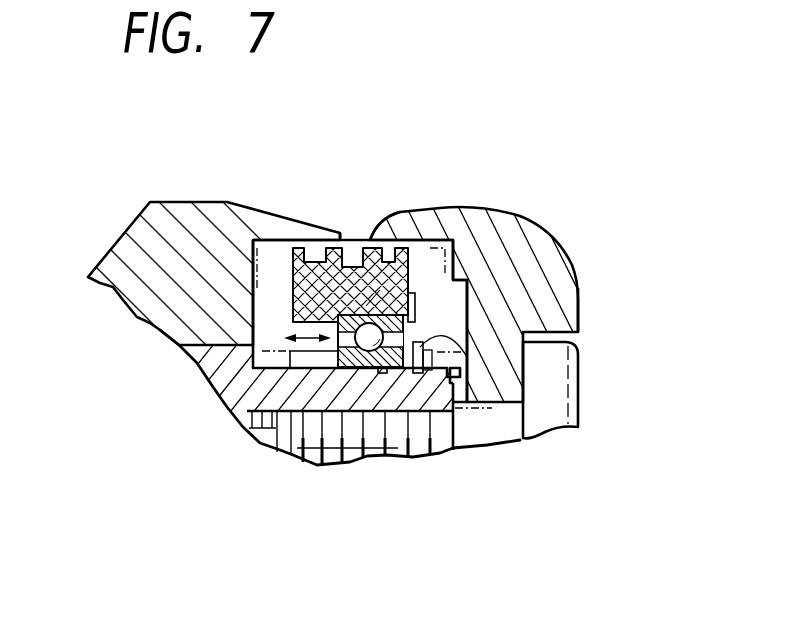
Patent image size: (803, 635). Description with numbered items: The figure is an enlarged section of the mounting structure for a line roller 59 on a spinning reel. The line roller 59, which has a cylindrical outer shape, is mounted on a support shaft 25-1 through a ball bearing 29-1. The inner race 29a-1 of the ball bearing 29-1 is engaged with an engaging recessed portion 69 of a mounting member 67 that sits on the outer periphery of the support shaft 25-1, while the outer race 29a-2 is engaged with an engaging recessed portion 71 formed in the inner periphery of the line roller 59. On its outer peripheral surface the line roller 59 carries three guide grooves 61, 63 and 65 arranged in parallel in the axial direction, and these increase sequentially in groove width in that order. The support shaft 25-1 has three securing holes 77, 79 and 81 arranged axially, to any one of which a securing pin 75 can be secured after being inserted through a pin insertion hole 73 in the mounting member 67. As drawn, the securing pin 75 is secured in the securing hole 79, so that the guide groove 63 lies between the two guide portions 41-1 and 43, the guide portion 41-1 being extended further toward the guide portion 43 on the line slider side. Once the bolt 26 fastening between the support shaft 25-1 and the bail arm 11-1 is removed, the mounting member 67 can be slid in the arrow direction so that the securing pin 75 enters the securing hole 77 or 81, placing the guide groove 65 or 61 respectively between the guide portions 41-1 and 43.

The engaging recessed portion 71 is at (250, 248).
The guide groove 65 is at (318, 256).
The guide portion 43 is at (336, 250).
The guide groove 63 is at (353, 258).
The guide portion 41-1 is at (378, 233).
The guide groove 61 is at (460, 213).
The ball bearing 29-1 is at (364, 309).
The outer race 29a-2 is at (414, 298).
The bail arm 11-1 is at (576, 300).
The line roller 59 is at (294, 298).
The inner race 29a-1 is at (292, 351).
The securing pin 75 is at (422, 348).
The bolt 26 is at (580, 410).
The mounting member 67 is at (257, 375).
The securing hole 77 is at (472, 360).
The support shaft 25-1 is at (330, 439).
The engaging recessed portion 69 is at (343, 357).
The pin insertion hole 73 is at (428, 372).
The securing hole 81 is at (371, 374).
The securing hole 79 is at (413, 374).